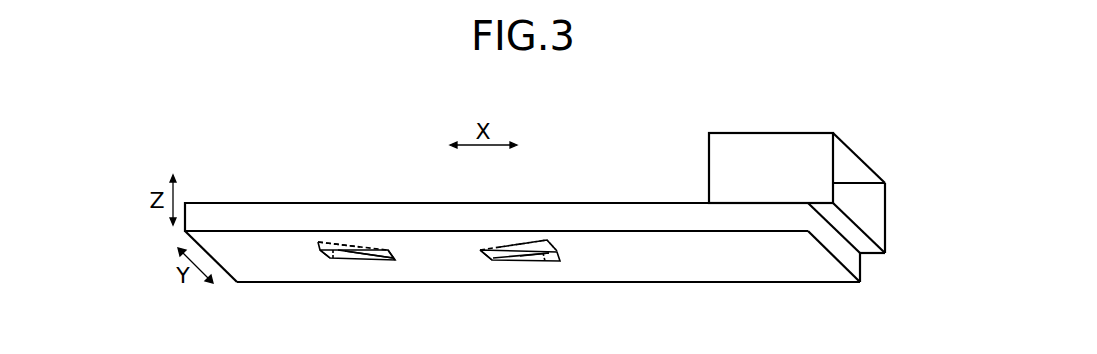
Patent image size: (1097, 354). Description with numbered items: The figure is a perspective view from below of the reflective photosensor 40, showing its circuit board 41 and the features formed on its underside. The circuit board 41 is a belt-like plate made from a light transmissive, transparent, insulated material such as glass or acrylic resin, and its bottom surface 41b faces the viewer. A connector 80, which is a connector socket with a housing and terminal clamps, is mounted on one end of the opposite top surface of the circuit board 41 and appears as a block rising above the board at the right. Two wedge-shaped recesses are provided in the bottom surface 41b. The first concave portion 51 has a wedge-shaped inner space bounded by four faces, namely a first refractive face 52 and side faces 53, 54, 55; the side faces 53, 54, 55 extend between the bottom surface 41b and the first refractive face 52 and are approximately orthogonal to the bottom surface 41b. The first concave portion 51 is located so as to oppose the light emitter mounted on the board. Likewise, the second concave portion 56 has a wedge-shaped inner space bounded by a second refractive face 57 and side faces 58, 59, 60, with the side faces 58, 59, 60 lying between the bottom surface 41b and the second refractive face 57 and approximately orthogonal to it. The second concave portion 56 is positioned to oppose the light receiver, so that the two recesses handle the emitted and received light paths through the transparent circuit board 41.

The reflective photosensor 40 is at (316, 179).
The circuit board 41 is at (228, 212).
The bottom surface 41b is at (757, 262).
The first concave portion 51 is at (354, 267).
The first refractive face 52 is at (395, 262).
The side face 53 is at (322, 258).
The side face 54 is at (333, 258).
The side face 55 is at (363, 262).
The second concave portion 56 is at (525, 268).
The second refractive face 57 is at (490, 262).
The side face 58 is at (543, 265).
The side face 59 is at (512, 262).
The side face 60 is at (535, 262).
The connector 80 is at (751, 126).